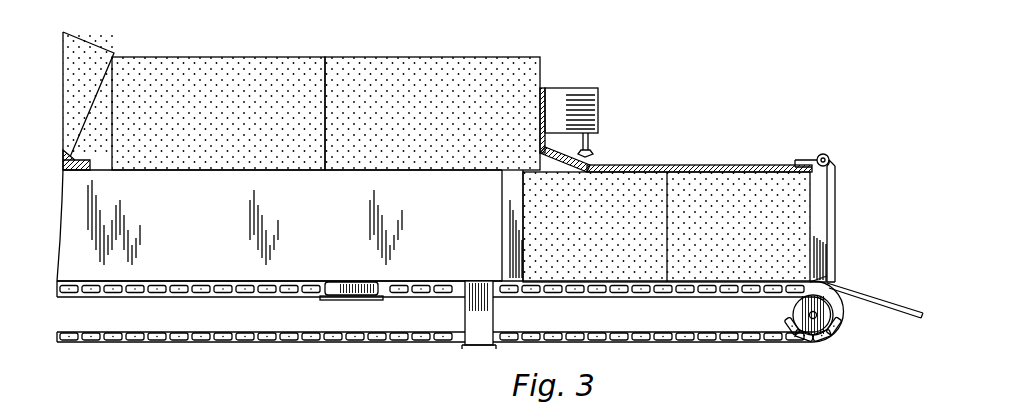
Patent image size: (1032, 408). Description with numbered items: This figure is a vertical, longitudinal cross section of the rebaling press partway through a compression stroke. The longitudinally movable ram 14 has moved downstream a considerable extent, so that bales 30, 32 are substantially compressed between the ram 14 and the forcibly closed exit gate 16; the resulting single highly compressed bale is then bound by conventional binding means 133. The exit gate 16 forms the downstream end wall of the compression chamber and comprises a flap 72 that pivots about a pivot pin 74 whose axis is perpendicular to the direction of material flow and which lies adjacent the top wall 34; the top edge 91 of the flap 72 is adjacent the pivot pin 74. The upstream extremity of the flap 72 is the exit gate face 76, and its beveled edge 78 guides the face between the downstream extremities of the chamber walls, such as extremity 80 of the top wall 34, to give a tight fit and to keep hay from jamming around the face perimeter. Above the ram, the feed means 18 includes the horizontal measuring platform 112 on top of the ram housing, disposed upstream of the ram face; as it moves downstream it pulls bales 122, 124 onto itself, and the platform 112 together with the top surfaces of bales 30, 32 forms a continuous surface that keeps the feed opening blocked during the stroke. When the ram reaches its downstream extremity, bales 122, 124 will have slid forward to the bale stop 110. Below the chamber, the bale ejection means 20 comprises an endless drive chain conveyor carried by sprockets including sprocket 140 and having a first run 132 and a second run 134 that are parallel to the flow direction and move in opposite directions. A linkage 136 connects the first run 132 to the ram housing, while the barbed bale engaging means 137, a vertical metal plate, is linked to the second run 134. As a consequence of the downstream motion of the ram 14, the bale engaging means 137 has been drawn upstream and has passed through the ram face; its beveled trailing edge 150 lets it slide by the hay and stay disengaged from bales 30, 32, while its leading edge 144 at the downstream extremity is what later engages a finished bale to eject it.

The ram 14 is at (215, 250).
The exit gate 16 is at (830, 200).
The feed means 18 is at (585, 32).
The bale ejection means 20 is at (330, 300).
The bale 30 is at (595, 268).
The bale 32 is at (744, 180).
The top wall 34 is at (700, 172).
The flap 72 is at (835, 218).
The pivot pin 74 is at (823, 154).
The exit gate face 76 is at (808, 196).
The beveled edge 78 is at (835, 181).
The downstream extremity of side wall 80 is at (831, 166).
The top edge 91 is at (831, 159).
The bale stop 110 is at (553, 98).
The measuring platform 112 is at (433, 166).
The bale 122 is at (213, 70).
The bale 124 is at (433, 72).
The first run 132 is at (195, 340).
The binding means 133 is at (555, 115).
The second run 134 is at (147, 295).
The linkage 136 is at (483, 328).
The barbed bale engaging means 137 is at (362, 300).
The sprocket 140 is at (834, 331).
The leading edge 144 is at (355, 275).
The trailing edge 150 is at (345, 280).